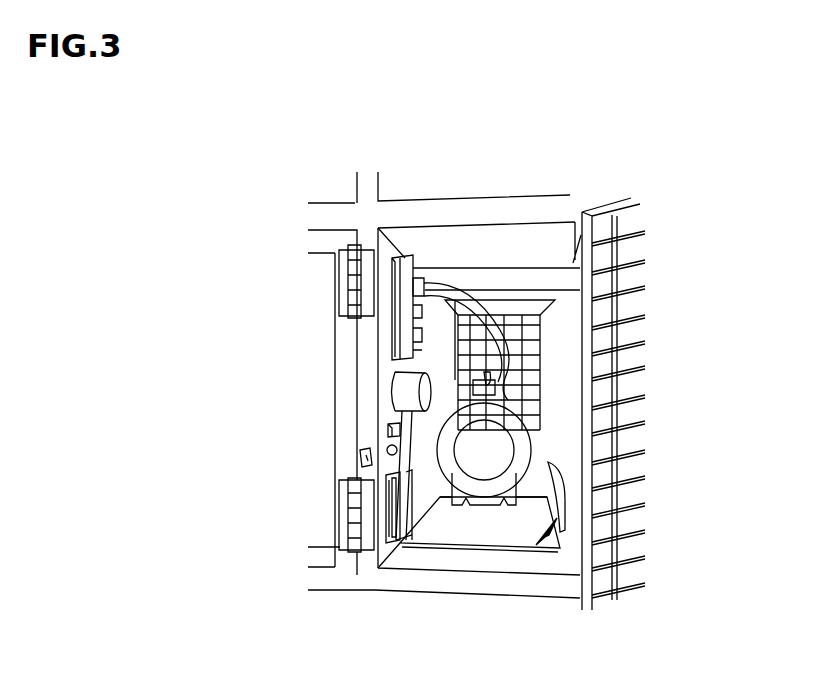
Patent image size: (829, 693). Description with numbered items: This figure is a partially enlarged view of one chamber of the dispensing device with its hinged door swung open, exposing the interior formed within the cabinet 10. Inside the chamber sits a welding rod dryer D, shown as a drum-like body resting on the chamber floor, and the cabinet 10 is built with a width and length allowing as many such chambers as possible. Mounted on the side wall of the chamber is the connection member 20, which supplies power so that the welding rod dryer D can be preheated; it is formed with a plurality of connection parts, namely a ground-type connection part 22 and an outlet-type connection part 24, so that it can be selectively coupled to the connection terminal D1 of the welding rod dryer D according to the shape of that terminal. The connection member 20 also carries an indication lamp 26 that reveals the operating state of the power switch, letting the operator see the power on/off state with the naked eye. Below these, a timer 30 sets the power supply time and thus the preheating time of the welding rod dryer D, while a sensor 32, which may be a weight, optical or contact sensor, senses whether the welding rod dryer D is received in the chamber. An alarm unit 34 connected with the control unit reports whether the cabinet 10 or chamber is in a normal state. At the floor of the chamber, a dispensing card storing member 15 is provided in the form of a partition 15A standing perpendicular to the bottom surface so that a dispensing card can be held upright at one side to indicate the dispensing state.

The cabinet 10 is at (364, 578).
The connection member 20 is at (418, 550).
The ground-type connection part 22 is at (398, 268).
The indication lamp 26 is at (418, 345).
The outlet-type connection part 24 is at (393, 395).
The timer 30 is at (388, 437).
The alarm unit 34 is at (388, 452).
The sensor 32 is at (395, 505).
The dispensing card storing member 15 is at (536, 545).
The partition 15A is at (600, 510).
The welding rod dryer D is at (505, 450).
The connection terminal D1 is at (478, 296).